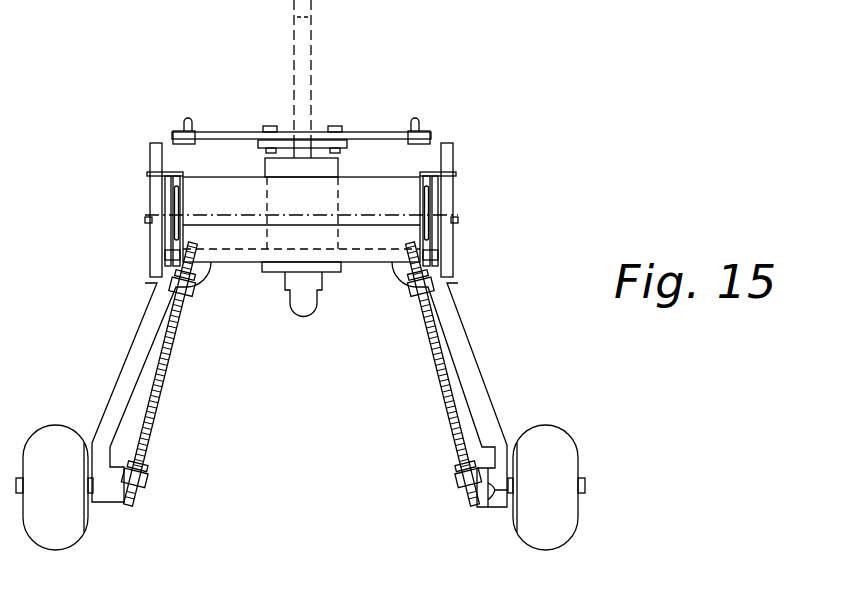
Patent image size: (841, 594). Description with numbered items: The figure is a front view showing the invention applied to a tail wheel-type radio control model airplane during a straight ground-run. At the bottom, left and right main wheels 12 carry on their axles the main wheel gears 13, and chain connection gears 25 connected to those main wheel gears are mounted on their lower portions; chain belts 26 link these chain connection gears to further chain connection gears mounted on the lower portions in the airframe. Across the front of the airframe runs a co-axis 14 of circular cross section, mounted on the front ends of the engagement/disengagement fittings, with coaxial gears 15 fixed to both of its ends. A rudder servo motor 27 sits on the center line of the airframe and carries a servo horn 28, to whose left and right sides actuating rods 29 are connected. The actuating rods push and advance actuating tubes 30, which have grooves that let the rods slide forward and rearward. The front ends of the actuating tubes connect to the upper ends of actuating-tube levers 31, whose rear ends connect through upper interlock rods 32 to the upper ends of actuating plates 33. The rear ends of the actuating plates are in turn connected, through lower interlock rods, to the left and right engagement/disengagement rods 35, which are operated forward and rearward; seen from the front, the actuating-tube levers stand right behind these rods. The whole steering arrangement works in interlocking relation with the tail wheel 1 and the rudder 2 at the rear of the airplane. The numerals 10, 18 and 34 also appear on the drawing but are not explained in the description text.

The tail wheel 1 is at (305, 303).
The rudder 2 is at (303, 97).
The frame 10 is at (332, 195).
The main wheel 12 is at (67, 515).
The main wheel gear 13 is at (140, 502).
The co-axis 14 is at (360, 260).
The coaxial gear 15 is at (193, 216).
The wheel arm 18 is at (137, 334).
The chain connection gear 25 is at (187, 310).
The chain belt 26 is at (150, 378).
The rudder servo motor 27 is at (445, 208).
The servo horn 28 is at (316, 136).
The actuating rod 29 is at (413, 128).
The actuating tube 30 is at (425, 136).
The actuating-tube lever 31 is at (424, 163).
The upper interlock rod 32 is at (204, 192).
The actuating plate 33 is at (253, 177).
The axle 34 is at (225, 223).
The engagement/disengagement rod 35 is at (428, 202).